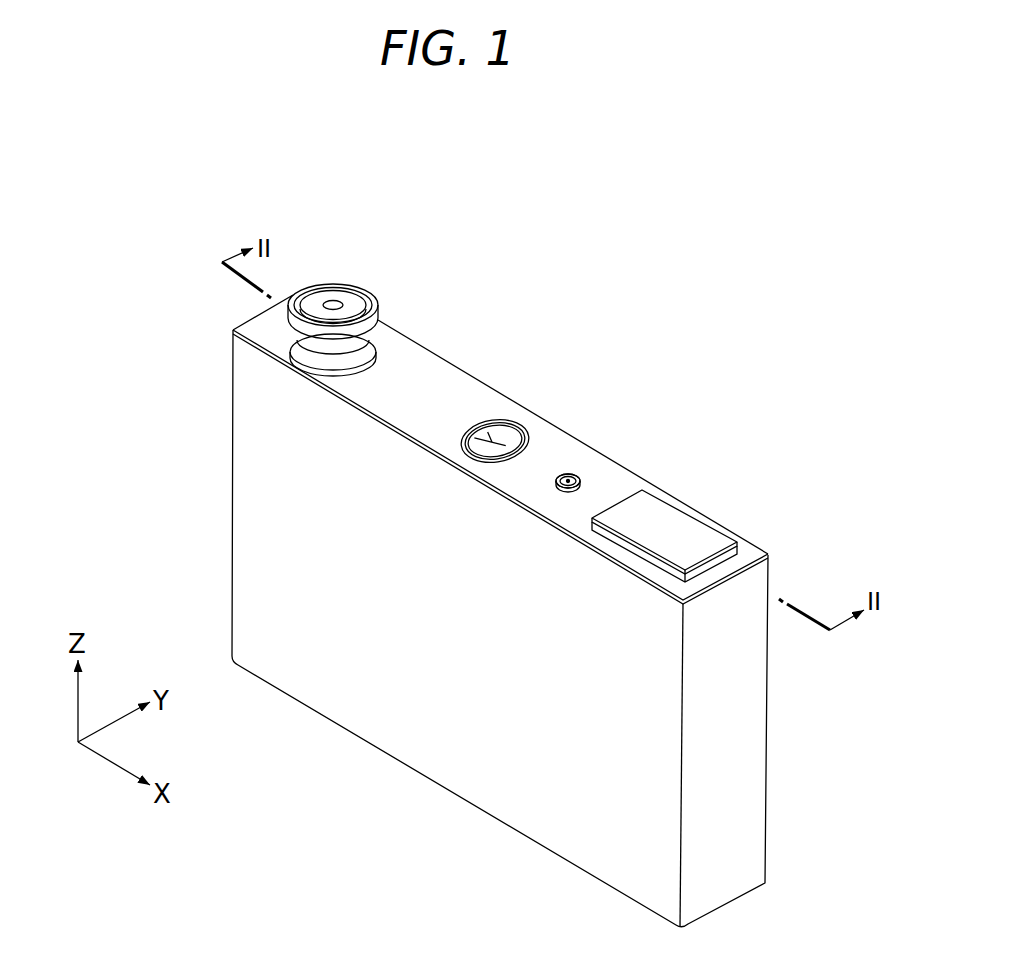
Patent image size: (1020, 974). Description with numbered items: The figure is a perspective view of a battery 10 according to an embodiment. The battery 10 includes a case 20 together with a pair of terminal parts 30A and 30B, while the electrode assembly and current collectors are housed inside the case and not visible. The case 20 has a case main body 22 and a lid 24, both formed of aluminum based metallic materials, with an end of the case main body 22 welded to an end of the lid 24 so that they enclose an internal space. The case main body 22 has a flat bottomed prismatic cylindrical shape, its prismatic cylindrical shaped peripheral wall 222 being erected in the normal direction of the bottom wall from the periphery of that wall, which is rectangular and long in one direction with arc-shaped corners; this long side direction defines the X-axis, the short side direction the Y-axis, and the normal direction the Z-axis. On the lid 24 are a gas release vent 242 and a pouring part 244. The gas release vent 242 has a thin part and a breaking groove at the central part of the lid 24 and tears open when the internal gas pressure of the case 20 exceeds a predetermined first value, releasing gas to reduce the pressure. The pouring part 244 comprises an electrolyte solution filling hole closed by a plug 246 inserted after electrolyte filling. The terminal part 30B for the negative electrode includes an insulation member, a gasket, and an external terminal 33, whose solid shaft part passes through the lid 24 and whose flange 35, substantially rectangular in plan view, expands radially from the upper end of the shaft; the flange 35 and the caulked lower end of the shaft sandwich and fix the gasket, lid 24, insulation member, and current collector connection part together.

The battery 10 is at (727, 360).
The case 20 is at (105, 422).
The case main body 22 is at (290, 458).
The lid 24 is at (268, 340).
The peripheral wall 222 is at (735, 795).
The gas release vent 242 is at (495, 422).
The pouring part 244 is at (563, 473).
The plug 246 is at (579, 478).
The terminal part 30A is at (360, 270).
The terminal part for the negative electrode 30B is at (690, 505).
The external terminal 33 is at (653, 513).
The flange 35 is at (710, 540).